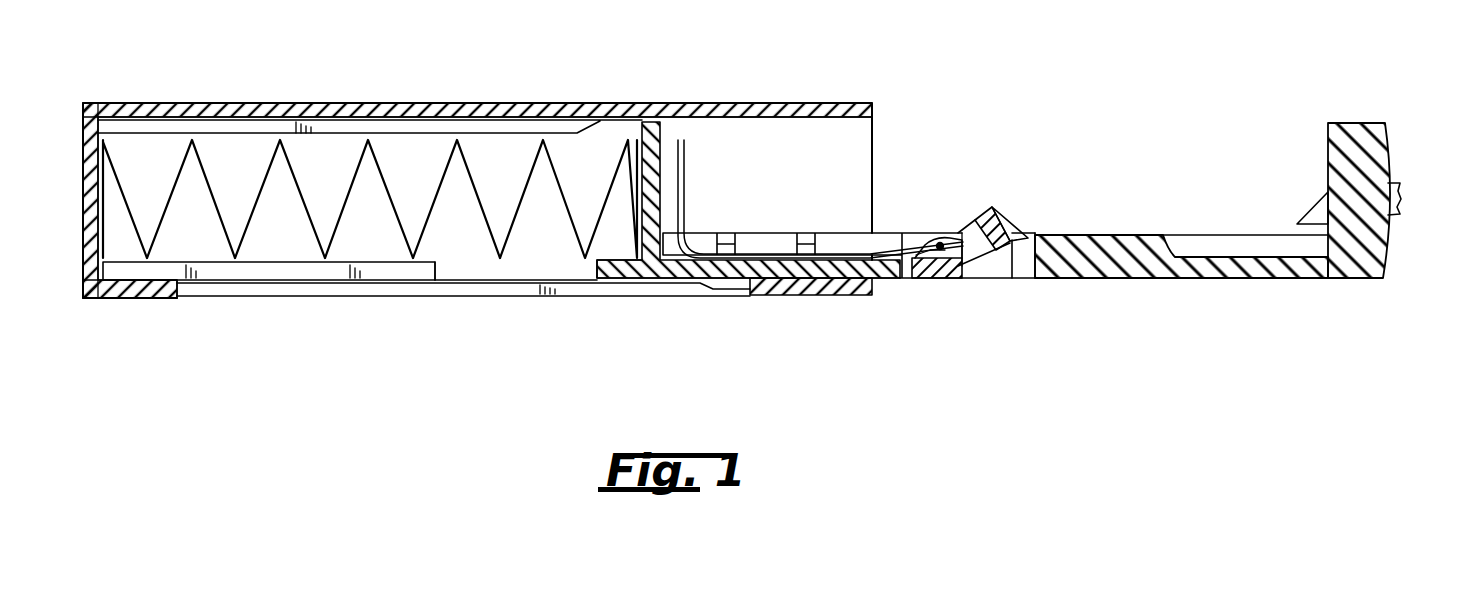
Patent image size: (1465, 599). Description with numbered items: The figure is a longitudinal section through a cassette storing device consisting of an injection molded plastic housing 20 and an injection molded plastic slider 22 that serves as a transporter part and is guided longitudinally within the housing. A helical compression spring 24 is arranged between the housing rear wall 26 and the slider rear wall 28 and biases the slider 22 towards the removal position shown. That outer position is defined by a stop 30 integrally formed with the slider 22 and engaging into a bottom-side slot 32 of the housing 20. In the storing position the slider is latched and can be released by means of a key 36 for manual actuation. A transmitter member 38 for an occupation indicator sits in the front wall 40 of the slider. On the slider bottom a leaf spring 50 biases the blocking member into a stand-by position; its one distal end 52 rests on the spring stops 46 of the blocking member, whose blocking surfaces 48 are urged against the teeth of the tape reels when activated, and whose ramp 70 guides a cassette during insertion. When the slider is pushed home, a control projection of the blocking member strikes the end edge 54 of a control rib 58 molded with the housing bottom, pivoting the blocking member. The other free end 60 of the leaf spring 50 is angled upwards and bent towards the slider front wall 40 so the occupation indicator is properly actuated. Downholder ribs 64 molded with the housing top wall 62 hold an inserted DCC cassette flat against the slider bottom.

The housing 20 is at (540, 101).
The slider 22 is at (1086, 280).
The helical compression spring 24 is at (493, 238).
The housing rear wall 26 is at (87, 268).
The slider rear wall 28 is at (648, 172).
The stop 30 is at (735, 286).
The bottom-side slot 32 is at (623, 285).
The key 36 is at (1400, 197).
The transmitter member 38 is at (1317, 217).
The front wall 40 is at (1358, 136).
The spring stops 46 is at (940, 280).
The blocking surfaces 48 is at (985, 212).
The leaf spring 50 is at (773, 256).
The end 52 is at (958, 237).
The end edge 54 is at (434, 273).
The control rib 58 is at (327, 272).
The free end 60 is at (687, 158).
The housing top wall 62 is at (421, 108).
The downholder ribs 64 is at (340, 130).
The ramp 70 is at (1008, 223).